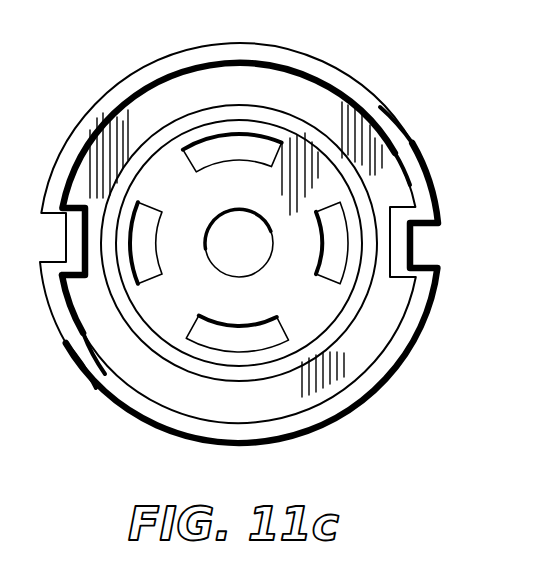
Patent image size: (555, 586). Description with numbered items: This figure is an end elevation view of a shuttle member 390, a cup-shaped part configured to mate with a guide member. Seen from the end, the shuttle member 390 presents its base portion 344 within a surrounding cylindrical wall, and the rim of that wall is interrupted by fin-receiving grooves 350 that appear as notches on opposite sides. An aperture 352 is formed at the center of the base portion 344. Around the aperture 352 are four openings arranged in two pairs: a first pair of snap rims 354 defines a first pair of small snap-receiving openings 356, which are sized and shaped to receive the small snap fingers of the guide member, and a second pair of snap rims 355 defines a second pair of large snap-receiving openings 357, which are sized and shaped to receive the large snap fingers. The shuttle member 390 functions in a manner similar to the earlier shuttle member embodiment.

The base portion 344 is at (367, 362).
The fin-receiving grooves 350 is at (35, 205).
The aperture 352 is at (246, 270).
The first pair of snap rims 354 is at (322, 258).
The second pair of snap rims 355 is at (236, 140).
The first pair of snap-receiving openings 356 is at (150, 255).
The second pair of snap-receiving openings 357 is at (201, 140).
The shuttle member 390 is at (370, 70).